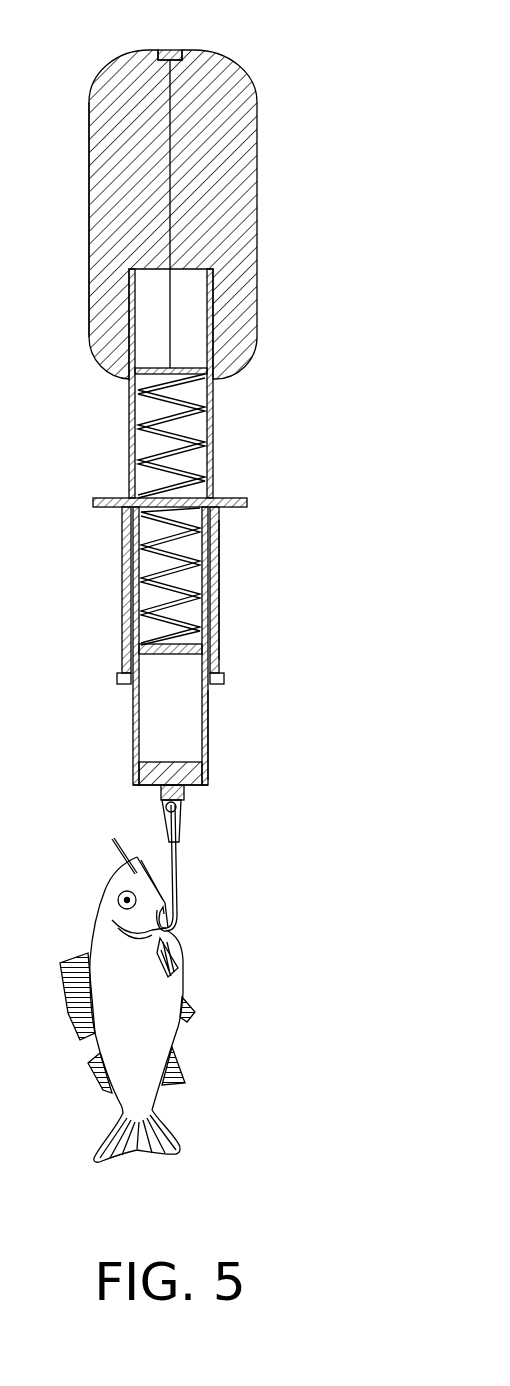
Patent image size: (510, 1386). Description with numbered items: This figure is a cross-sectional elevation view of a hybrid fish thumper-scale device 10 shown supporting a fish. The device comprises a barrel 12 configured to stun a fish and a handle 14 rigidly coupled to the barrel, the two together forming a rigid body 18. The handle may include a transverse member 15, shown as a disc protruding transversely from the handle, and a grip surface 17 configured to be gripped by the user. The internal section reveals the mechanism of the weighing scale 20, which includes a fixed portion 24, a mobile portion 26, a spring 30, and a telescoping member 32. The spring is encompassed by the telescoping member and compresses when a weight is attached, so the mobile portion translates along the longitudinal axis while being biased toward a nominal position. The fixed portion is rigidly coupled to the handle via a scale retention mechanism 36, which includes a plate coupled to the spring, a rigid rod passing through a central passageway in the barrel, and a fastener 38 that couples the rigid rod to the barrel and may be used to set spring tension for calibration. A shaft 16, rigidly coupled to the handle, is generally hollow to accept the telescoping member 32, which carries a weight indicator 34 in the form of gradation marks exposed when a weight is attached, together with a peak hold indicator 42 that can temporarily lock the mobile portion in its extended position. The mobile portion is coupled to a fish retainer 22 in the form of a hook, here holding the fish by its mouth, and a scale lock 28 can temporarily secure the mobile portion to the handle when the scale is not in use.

The hybrid fish thumper-scale device 10 is at (244, 56).
The barrel 12 is at (89, 255).
The handle 14 is at (123, 583).
The transverse member 15 is at (247, 503).
The shaft 16 is at (128, 437).
The grip surface 17 is at (221, 580).
The body 18 is at (89, 177).
The weighing scale 20 is at (186, 789).
The fish retainer 22 is at (180, 884).
The fixed portion 24 is at (203, 650).
The mobile portion 26 is at (133, 745).
The scale lock 28 is at (226, 700).
The spring 30 is at (214, 423).
The telescoping member 32 is at (133, 760).
The weight indicator 34 is at (208, 713).
The scale retention mechanism 36 is at (173, 200).
The fastener 38 is at (166, 48).
The peak hold indicator 42 is at (113, 698).